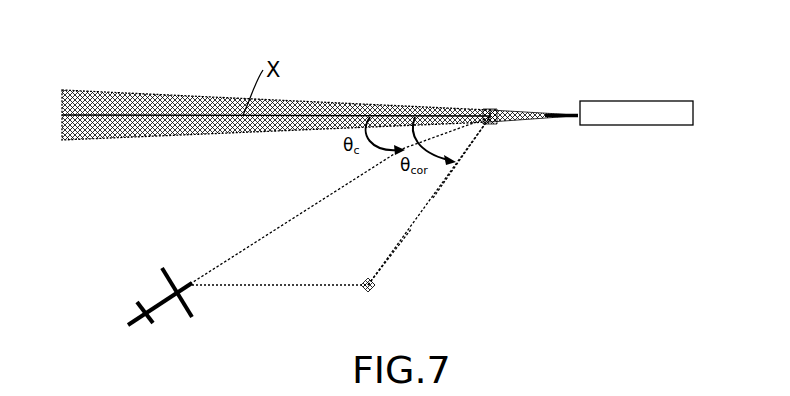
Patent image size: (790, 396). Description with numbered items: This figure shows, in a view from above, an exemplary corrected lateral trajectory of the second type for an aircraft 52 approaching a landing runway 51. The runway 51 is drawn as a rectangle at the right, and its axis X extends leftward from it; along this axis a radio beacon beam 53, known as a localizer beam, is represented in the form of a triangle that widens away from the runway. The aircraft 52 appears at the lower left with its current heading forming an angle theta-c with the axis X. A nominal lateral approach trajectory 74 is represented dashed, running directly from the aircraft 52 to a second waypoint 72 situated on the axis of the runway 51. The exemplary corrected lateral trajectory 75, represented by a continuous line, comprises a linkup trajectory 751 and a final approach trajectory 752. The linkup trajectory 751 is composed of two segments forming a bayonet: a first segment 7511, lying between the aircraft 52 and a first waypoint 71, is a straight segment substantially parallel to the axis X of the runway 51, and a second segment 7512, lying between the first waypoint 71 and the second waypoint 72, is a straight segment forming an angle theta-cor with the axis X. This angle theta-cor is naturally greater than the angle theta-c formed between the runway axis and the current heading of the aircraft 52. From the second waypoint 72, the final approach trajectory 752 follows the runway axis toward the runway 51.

The radio beacon beam 53 is at (102, 90).
The landing runway 51 is at (630, 118).
The aircraft 52 is at (157, 310).
The second waypoint 72 is at (490, 113).
The final approach trajectory 752 is at (517, 121).
The nominal lateral approach trajectory 74 is at (267, 235).
The corrected lateral trajectory 75 is at (412, 228).
The linkup trajectory 751 is at (383, 267).
The second segment 7512 is at (433, 198).
The first waypoint 71 is at (370, 291).
The first segment 7511 is at (283, 285).